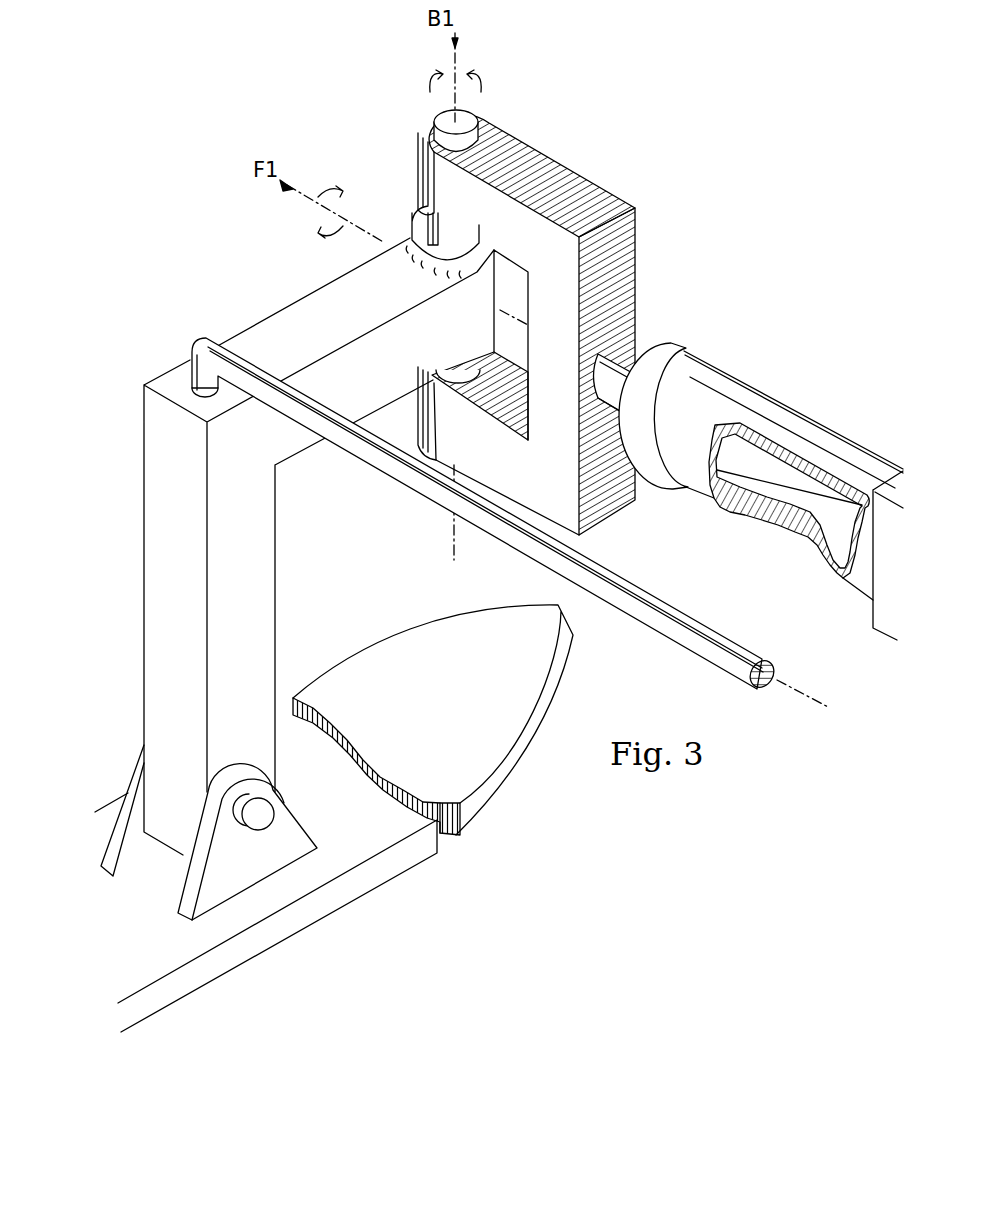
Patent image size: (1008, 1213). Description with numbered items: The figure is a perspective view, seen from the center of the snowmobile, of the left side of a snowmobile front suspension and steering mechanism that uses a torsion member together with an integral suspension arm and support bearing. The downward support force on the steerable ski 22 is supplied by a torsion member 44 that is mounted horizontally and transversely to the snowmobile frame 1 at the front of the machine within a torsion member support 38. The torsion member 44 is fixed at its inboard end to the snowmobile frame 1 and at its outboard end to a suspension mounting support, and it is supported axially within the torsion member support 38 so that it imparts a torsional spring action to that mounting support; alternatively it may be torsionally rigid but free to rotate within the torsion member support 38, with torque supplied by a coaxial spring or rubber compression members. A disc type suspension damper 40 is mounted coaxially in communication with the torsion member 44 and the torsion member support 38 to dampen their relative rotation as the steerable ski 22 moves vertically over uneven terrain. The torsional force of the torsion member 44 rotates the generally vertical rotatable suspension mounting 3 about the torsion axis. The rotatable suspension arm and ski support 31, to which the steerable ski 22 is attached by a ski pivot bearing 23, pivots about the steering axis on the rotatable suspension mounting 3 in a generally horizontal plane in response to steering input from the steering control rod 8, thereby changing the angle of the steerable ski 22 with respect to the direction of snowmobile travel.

The snowmobile frame 1 is at (885, 615).
The rotatable suspension mounting 3 is at (440, 125).
The steering control rod 8 is at (627, 598).
The steerable ski 22 is at (387, 830).
The ski pivot bearing 23 is at (270, 823).
The rotatable suspension arm and ski support 31 is at (287, 325).
The torsion member support 38 is at (697, 390).
The disc type suspension damper 40 is at (685, 348).
The torsion member 44 is at (620, 375).